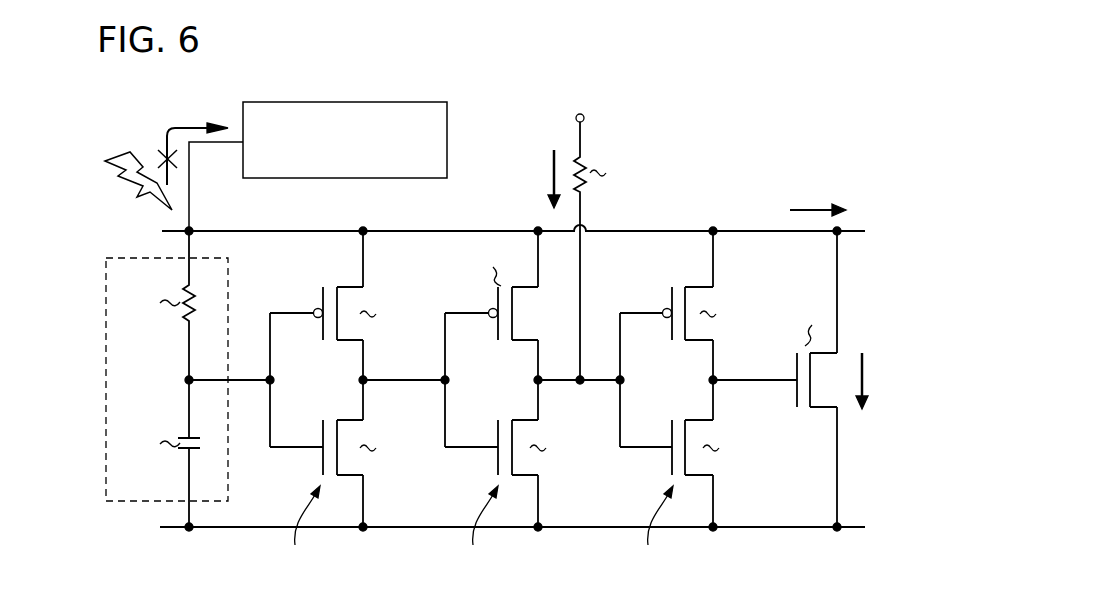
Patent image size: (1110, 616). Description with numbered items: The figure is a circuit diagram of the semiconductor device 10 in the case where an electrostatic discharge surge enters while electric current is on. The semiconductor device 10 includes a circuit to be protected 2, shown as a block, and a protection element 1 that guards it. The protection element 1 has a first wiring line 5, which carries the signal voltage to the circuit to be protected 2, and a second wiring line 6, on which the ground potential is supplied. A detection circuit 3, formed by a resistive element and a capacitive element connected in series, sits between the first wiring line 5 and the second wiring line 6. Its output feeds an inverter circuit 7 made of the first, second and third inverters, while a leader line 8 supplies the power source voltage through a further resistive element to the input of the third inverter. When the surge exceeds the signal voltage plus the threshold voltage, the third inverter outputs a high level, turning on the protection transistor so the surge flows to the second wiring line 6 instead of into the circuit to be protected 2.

The semiconductor device 10 is at (174, 91).
The circuit to be protected 2 is at (335, 102).
The first wiring line 5 is at (213, 228).
The detection circuit 3 is at (106, 335).
The second wiring line 6 is at (214, 533).
The protection element 1 is at (733, 164).
The inverter circuit 7 is at (675, 568).
The leader line 8 is at (584, 269).